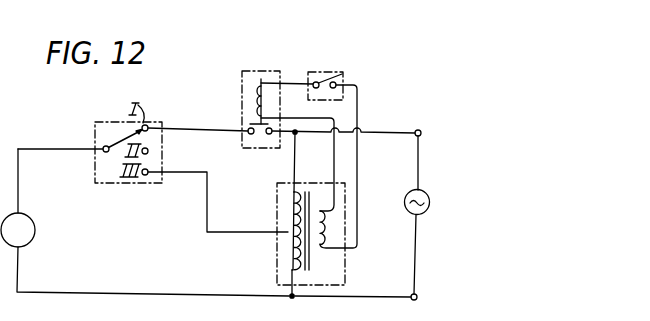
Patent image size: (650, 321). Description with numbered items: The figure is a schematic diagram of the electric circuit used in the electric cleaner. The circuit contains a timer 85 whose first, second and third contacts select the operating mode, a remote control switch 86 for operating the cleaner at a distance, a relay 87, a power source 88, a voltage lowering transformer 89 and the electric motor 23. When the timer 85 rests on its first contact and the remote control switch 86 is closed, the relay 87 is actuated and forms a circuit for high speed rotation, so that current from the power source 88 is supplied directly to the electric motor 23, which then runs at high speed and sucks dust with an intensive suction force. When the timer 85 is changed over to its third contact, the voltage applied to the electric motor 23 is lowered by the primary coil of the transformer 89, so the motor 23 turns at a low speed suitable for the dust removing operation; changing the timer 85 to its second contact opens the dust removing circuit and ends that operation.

The electric motor 23 is at (31, 243).
The timer 85 is at (149, 122).
The remote control switch 86 is at (312, 68).
The relay 87 is at (275, 68).
The power source 88 is at (429, 203).
The transformer 89 is at (346, 284).